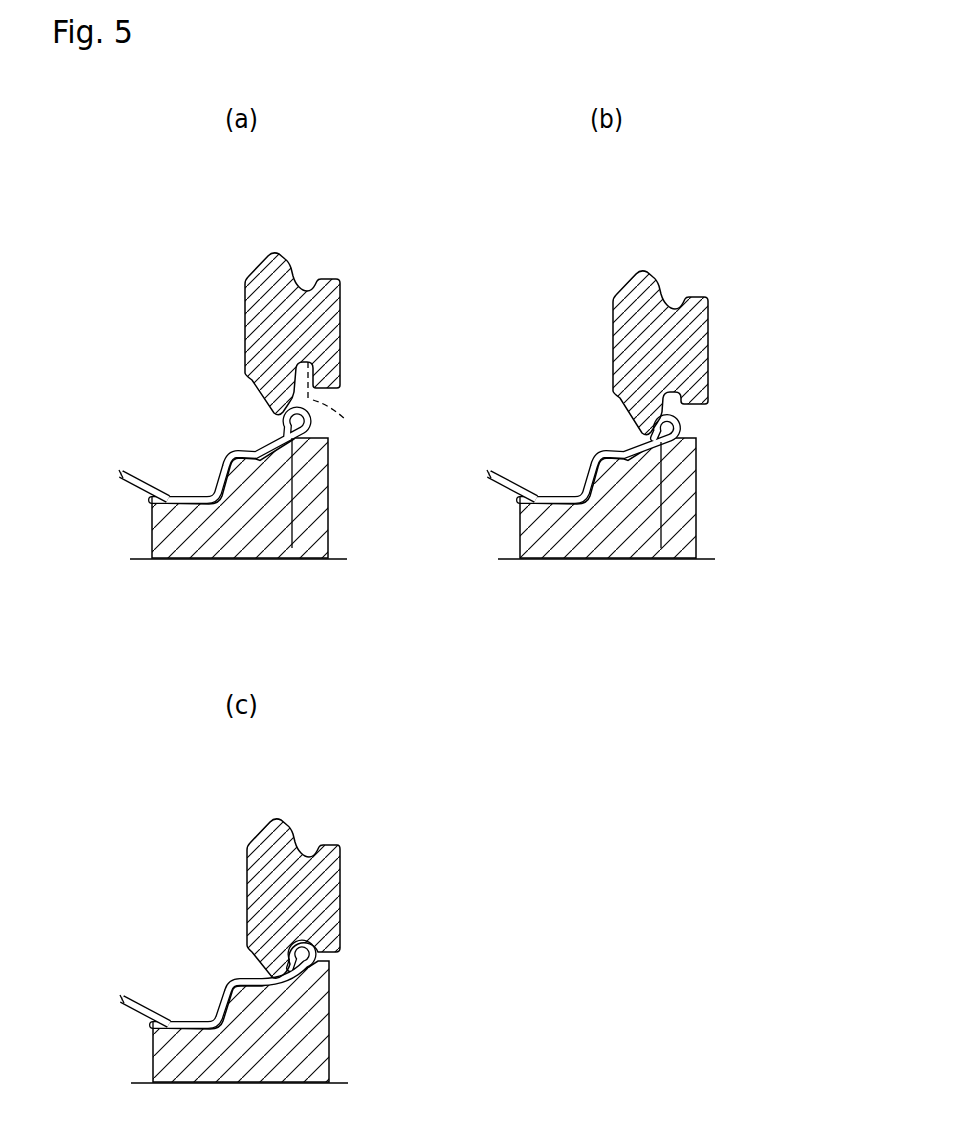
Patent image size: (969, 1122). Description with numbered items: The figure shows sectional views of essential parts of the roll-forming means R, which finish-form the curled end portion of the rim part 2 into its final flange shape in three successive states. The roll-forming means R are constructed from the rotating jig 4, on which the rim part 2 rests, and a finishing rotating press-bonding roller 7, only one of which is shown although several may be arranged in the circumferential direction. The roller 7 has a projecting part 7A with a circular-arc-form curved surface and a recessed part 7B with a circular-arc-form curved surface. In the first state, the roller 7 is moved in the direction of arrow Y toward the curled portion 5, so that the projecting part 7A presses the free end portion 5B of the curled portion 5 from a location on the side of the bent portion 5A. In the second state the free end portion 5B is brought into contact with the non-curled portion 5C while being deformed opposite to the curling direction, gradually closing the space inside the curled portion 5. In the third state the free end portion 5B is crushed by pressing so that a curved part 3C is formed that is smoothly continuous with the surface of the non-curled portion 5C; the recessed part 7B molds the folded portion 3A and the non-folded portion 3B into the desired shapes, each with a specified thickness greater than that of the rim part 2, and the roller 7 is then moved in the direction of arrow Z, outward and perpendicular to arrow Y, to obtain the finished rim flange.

The rim part 2 is at (173, 497).
The folded portion 3A is at (300, 937).
The non-folded portion 3B is at (317, 962).
The curved part 3C is at (289, 963).
The rotating jig 4 is at (329, 496).
The curled portion 5 is at (346, 420).
The bent portion 5A is at (298, 405).
The free end portion 5B is at (283, 436).
The non-curled portion 5C is at (292, 548).
The finishing rotating press-bonding roller 7 is at (245, 304).
The projecting part 7A is at (281, 413).
The recessed part 7B is at (307, 289).
The roll-forming means R is at (177, 253).
The arrow Y is at (380, 305).
The arrow Z is at (382, 993).